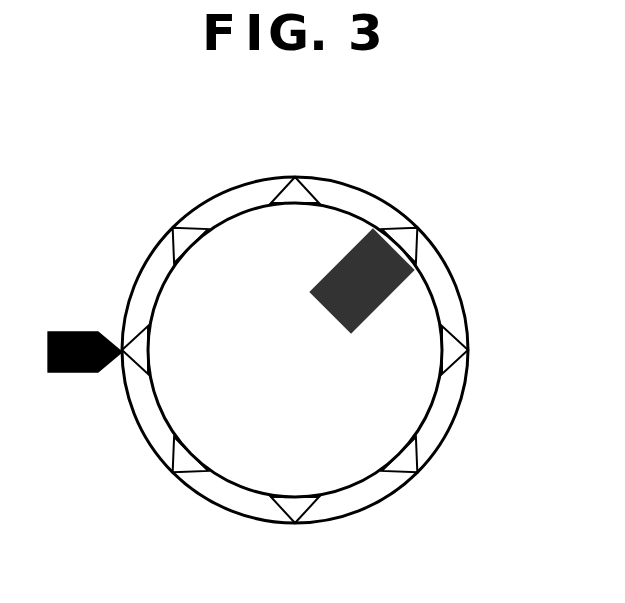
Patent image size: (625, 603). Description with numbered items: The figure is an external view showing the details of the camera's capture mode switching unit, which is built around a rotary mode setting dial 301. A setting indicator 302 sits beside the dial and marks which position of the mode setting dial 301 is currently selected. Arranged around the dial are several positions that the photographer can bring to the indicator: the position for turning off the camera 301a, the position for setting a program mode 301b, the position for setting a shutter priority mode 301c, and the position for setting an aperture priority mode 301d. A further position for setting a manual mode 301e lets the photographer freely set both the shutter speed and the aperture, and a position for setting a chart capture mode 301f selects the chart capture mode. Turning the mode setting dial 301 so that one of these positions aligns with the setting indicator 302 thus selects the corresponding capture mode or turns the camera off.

The mode setting dial 301 is at (354, 181).
The position for turning off the camera 301a is at (418, 232).
The position for setting a program mode 301b is at (428, 323).
The position for setting a shutter priority mode 301c is at (415, 423).
The position for setting an aperture priority mode 301d is at (320, 473).
The position for setting a manual mode 301e is at (223, 453).
The position for setting a chart capture mode 301f is at (167, 330).
The setting indicator 302 is at (72, 373).